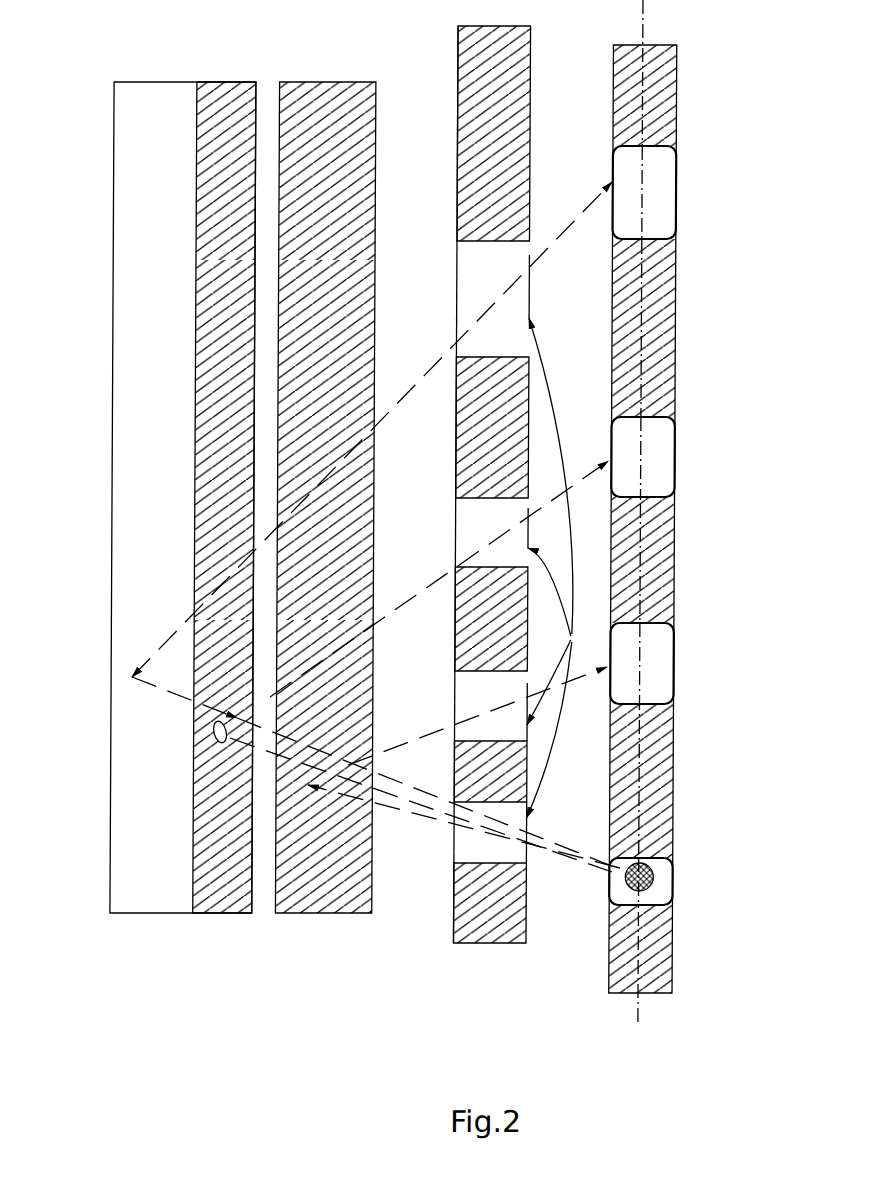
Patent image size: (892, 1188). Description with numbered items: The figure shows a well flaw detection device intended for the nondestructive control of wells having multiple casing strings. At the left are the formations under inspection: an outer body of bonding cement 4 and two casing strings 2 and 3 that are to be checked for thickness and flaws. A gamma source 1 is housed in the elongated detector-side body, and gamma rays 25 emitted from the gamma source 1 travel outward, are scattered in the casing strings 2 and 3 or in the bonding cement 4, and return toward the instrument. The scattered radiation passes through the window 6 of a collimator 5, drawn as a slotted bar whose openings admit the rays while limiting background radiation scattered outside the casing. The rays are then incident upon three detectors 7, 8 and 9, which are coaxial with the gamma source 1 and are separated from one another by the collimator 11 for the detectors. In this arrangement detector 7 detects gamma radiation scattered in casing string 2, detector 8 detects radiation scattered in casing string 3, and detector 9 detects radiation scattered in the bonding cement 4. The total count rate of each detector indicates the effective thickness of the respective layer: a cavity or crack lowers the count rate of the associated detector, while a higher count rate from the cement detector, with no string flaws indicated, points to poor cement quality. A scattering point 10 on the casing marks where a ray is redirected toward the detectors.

The gamma source 1 is at (678, 882).
The casing string 2 is at (315, 382).
The casing string 3 is at (225, 360).
The bonding cement 4 is at (138, 248).
The collimator 5 is at (495, 946).
The window 6 is at (564, 568).
The detector 7 is at (679, 654).
The detector 8 is at (677, 478).
The detector 9 is at (678, 190).
The scattering particle 10 is at (216, 740).
The collimator 11 is at (678, 48).
The gamma rays 25 is at (584, 956).